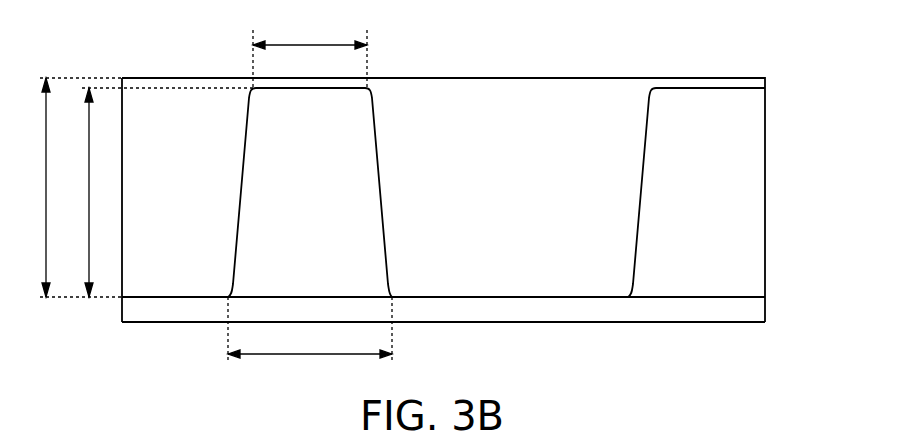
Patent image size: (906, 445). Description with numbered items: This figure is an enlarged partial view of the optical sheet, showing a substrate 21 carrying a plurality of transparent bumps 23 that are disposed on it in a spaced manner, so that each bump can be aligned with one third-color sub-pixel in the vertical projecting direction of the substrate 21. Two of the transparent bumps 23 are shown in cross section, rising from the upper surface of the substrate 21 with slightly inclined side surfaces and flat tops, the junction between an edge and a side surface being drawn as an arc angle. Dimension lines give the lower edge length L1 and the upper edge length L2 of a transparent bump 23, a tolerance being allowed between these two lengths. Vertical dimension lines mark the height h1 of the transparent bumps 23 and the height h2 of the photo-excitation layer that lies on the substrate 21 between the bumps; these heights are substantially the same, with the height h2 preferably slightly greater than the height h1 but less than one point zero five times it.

The substrate 21 is at (553, 307).
The transparent bumps 23 is at (372, 249).
The lower edge length L1 is at (310, 328).
The upper edge length L2 is at (310, 53).
The height of the transparent bumps h1 is at (154, 192).
The height of the photo-excitation layer h2 is at (66, 187).